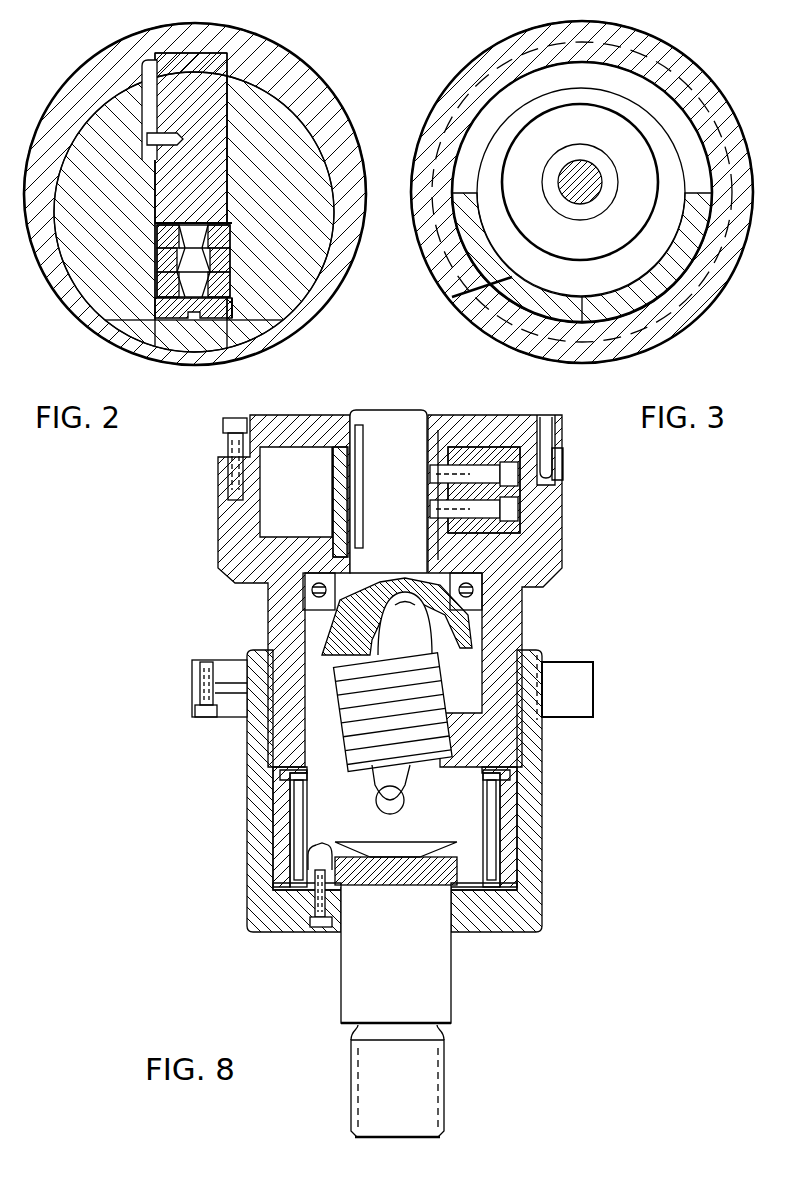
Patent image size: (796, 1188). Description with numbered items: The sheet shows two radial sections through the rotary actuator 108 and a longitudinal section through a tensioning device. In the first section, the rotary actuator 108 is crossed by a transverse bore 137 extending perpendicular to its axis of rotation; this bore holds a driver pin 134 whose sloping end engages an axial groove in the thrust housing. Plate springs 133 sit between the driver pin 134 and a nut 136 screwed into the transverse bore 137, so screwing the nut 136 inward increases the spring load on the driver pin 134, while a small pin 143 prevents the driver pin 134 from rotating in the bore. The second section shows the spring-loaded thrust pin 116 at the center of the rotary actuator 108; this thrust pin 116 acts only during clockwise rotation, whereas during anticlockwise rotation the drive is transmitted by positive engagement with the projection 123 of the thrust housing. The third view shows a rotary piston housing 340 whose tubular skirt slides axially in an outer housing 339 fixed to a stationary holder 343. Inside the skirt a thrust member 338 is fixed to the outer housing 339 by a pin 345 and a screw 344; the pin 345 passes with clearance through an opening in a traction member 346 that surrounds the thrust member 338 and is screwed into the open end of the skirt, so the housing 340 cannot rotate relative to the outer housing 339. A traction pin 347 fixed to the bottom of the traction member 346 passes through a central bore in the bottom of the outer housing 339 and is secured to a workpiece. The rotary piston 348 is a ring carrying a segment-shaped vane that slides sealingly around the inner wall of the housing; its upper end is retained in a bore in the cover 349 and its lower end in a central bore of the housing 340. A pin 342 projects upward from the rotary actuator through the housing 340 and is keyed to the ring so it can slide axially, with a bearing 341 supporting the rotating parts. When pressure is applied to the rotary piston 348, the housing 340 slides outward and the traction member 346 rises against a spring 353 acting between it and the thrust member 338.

In FIG. 3, the rotary actuator 108 is at (640, 297).
In FIG. 3, the spring-loaded thrust pin 116 is at (570, 178).
In FIG. 3, the projection 123 is at (540, 307).
In FIG. 2, the plate springs 133 is at (156, 244).
In FIG. 2, the driver pin 134 is at (205, 147).
In FIG. 2, the nut 136 is at (183, 312).
In FIG. 2, the transverse bore 137 is at (243, 285).
In FIG. 2, the pin 143 is at (170, 130).
In FIG. 8, the thrust member 338 is at (462, 808).
In FIG. 8, the outer housing 339 is at (517, 928).
In FIG. 8, the rotary piston housing 340 is at (540, 537).
In FIG. 8, the bearing 341 is at (480, 592).
In FIG. 8, the pin 342 is at (407, 433).
In FIG. 8, the stationary holder 343 is at (570, 700).
In FIG. 8, the screw 344 is at (317, 928).
In FIG. 8, the pin 345 is at (313, 893).
In FIG. 8, the traction member 346 is at (475, 893).
In FIG. 8, the traction pin 347 is at (368, 997).
In FIG. 8, the rotary piston 348 is at (507, 448).
In FIG. 8, the cover 349 is at (272, 433).
In FIG. 8, the spring 353 is at (462, 857).